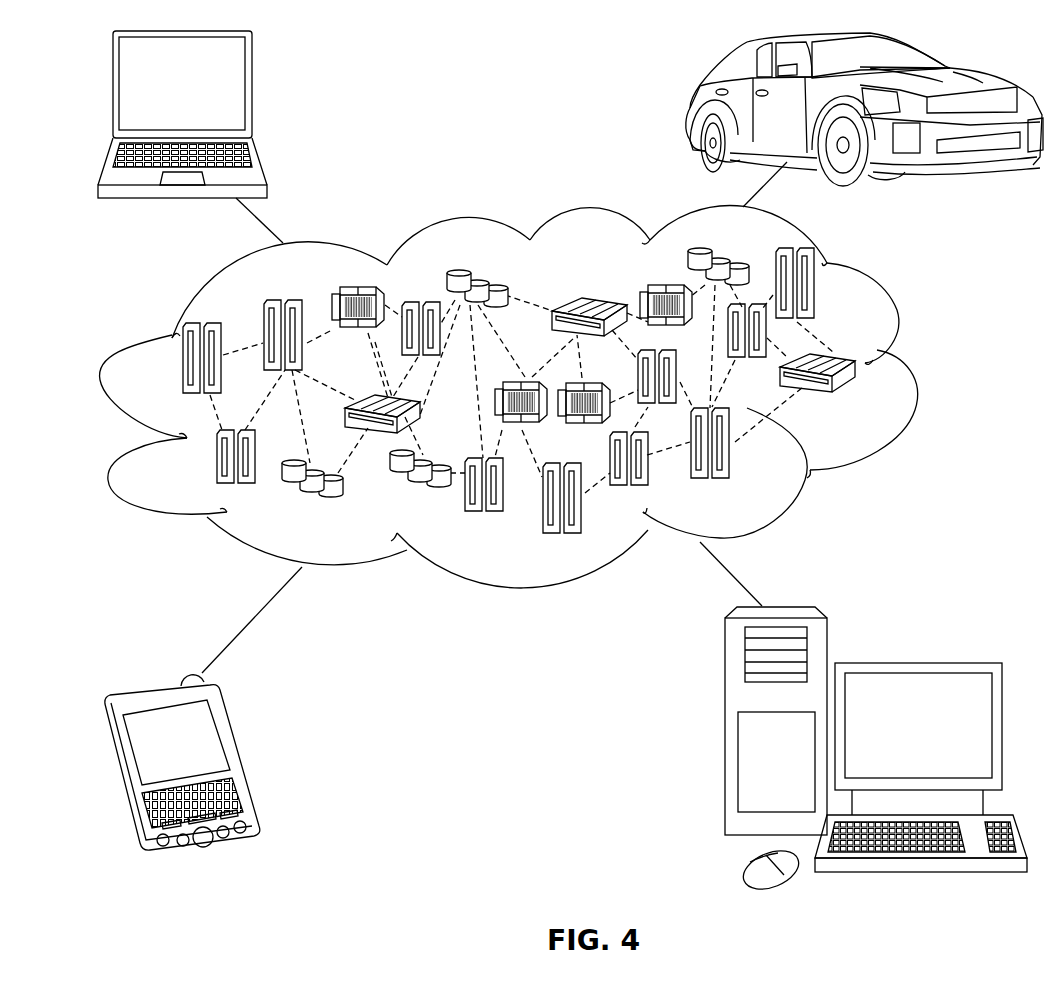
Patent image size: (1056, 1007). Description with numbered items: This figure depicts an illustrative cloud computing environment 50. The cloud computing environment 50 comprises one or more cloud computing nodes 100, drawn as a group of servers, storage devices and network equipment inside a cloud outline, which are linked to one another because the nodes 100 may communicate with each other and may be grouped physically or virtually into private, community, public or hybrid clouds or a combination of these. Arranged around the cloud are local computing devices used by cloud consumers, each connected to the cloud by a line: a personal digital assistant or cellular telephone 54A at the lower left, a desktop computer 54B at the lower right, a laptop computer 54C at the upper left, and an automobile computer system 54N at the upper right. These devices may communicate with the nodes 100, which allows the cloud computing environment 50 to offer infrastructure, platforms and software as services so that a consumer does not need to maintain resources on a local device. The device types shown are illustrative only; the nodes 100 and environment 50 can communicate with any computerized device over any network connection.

The cloud computing environment 50 is at (915, 368).
The cloud computing nodes 100 is at (858, 400).
The personal digital assistant or cellular telephone 54A is at (242, 757).
The desktop computer 54B is at (915, 662).
The laptop computer 54C is at (252, 92).
The automobile computer system 54N is at (695, 108).